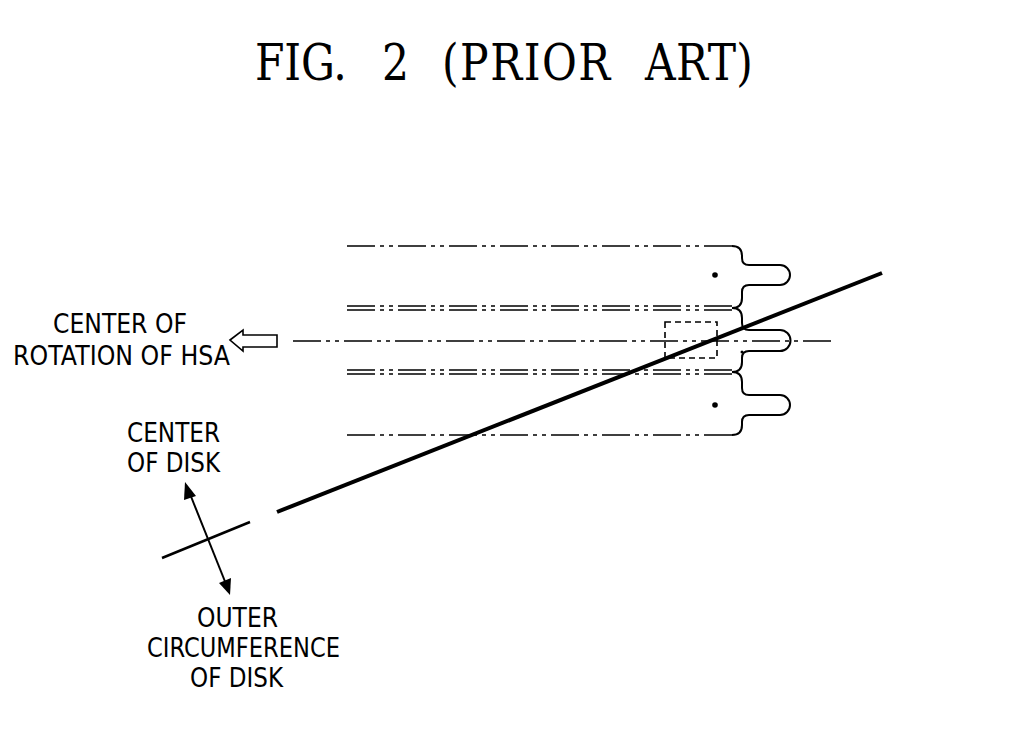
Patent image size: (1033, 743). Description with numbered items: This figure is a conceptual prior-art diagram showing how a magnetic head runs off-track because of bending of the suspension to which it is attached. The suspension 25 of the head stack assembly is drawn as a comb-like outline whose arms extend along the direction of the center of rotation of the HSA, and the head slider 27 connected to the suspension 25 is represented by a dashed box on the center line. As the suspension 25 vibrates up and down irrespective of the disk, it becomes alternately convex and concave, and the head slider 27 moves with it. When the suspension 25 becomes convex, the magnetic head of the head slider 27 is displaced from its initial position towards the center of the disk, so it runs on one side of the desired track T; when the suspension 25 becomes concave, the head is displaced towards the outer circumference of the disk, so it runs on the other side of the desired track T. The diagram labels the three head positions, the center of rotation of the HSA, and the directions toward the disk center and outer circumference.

The suspension 25 is at (736, 364).
The head slider 27 is at (673, 321).
The desired track T is at (594, 381).